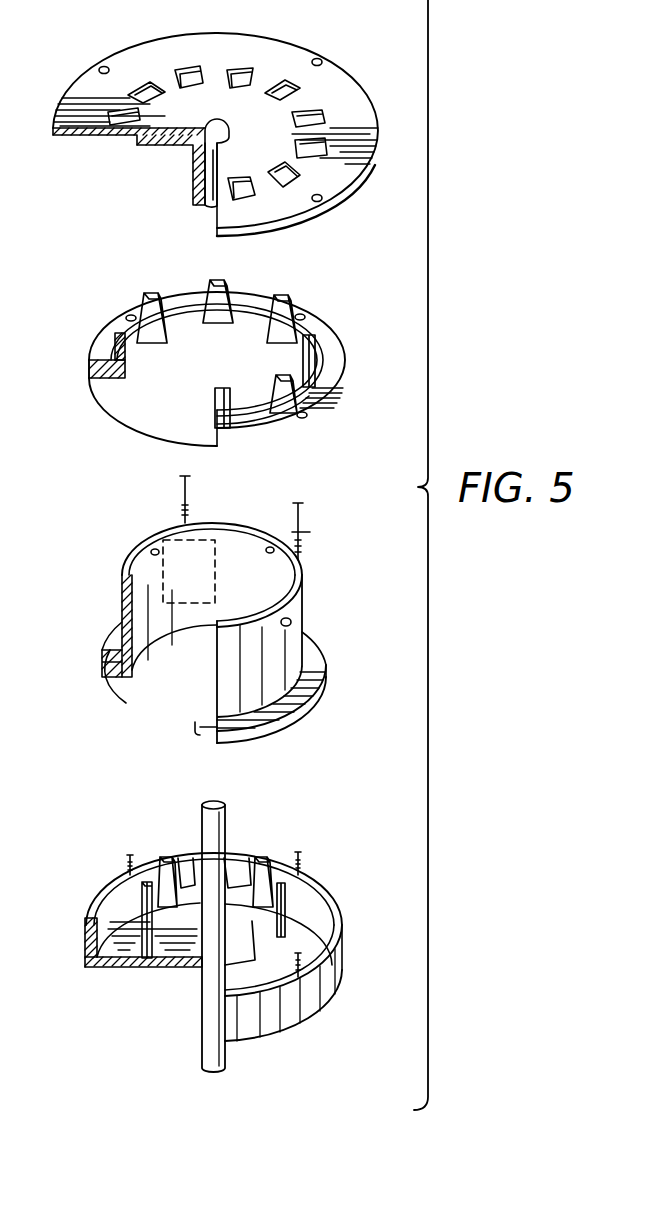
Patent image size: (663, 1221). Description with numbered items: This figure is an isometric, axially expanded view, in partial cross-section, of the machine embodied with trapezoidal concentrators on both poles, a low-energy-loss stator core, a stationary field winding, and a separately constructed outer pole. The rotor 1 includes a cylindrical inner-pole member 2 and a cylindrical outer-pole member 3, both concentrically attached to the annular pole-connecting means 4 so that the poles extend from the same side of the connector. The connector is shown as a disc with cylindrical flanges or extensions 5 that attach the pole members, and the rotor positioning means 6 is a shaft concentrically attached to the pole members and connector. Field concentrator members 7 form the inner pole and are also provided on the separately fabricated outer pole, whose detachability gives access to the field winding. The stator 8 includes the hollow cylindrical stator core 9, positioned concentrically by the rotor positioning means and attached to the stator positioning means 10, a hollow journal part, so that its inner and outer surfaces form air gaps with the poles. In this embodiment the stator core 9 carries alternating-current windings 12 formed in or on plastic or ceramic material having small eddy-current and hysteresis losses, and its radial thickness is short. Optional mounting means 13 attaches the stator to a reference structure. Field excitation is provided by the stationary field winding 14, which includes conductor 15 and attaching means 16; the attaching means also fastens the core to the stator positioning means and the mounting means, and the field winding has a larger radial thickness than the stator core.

The rotor 1 is at (108, 320).
The inner-pole member 2 is at (249, 916).
The outer-pole member 3 is at (264, 339).
The pole-connecting means 4 is at (121, 968).
The cylindrical flanges or extensions 5 is at (108, 378).
The rotor positioning means 6 is at (212, 803).
The field concentrator members 7 is at (287, 306).
The stator 8 is at (110, 50).
The stator core 9 is at (243, 528).
The stator positioning means 10 is at (193, 172).
The alternating-current windings 12 is at (183, 505).
The mounting means 13 is at (326, 193).
The stationary field winding 14 is at (318, 655).
The conductor 15 is at (303, 545).
The attaching means 16 is at (291, 622).